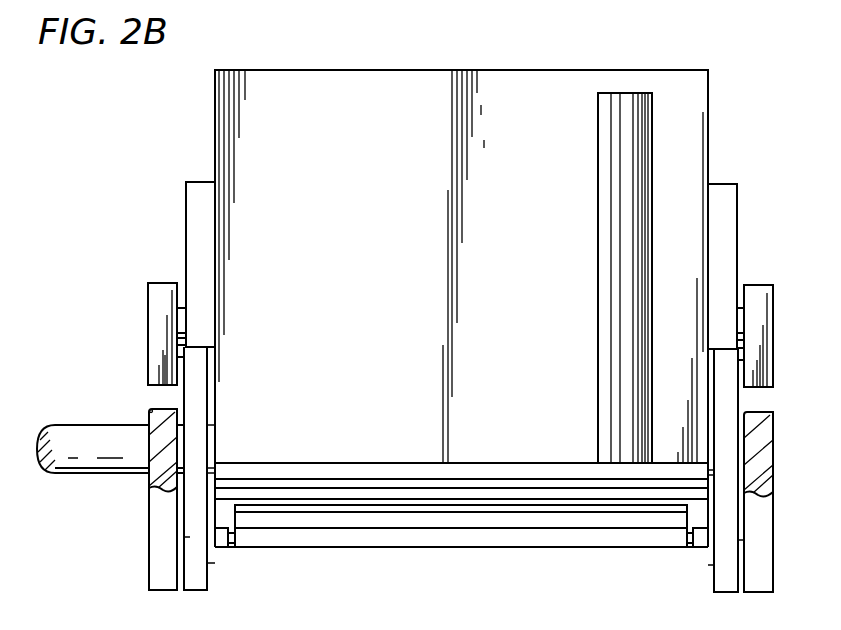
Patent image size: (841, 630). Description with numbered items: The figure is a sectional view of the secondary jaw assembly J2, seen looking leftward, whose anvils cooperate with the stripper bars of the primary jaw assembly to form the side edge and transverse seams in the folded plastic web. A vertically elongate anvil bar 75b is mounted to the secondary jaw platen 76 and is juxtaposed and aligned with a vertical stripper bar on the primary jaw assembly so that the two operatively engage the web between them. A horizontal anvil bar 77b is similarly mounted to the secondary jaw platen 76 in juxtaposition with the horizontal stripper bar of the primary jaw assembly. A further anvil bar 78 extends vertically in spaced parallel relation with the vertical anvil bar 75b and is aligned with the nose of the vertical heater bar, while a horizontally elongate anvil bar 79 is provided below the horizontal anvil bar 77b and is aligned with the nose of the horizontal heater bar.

The secondary jaw platen 76 is at (409, 82).
The secondary jaw assembly J2 is at (532, 85).
The vertically elongate anvil bar 75b is at (600, 180).
The anvil bar 78 is at (627, 195).
The horizontal anvil bar 77b is at (315, 475).
The horizontally elongate anvil bar 79 is at (325, 495).